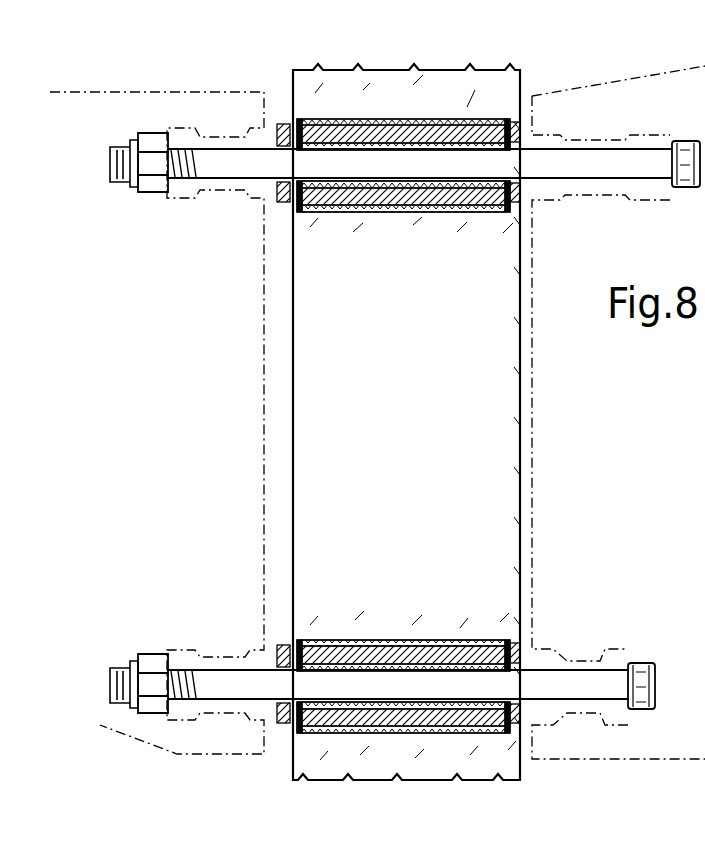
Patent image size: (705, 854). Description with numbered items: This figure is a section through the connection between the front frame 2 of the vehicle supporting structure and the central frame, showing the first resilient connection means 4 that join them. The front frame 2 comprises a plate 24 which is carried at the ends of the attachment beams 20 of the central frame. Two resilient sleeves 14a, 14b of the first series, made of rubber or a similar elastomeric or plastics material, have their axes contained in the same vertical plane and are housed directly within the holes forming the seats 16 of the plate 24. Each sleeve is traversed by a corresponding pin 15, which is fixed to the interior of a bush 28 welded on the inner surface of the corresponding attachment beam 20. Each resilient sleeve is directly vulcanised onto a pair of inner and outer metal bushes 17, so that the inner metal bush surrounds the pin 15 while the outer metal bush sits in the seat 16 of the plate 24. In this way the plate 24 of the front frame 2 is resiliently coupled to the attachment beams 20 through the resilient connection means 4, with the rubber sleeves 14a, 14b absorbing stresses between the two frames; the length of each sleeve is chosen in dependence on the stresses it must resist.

The front frame 2 is at (272, 353).
The first resilient connection means 4 is at (284, 124).
The sleeve 14a is at (467, 130).
The sleeve 14b is at (480, 641).
The pin 15 is at (596, 168).
The seat 16 is at (403, 213).
The inner and outer metal bushes 17 is at (321, 120).
The attachment beam 20 is at (647, 100).
The plate 24 is at (460, 460).
The bush 28 is at (652, 142).